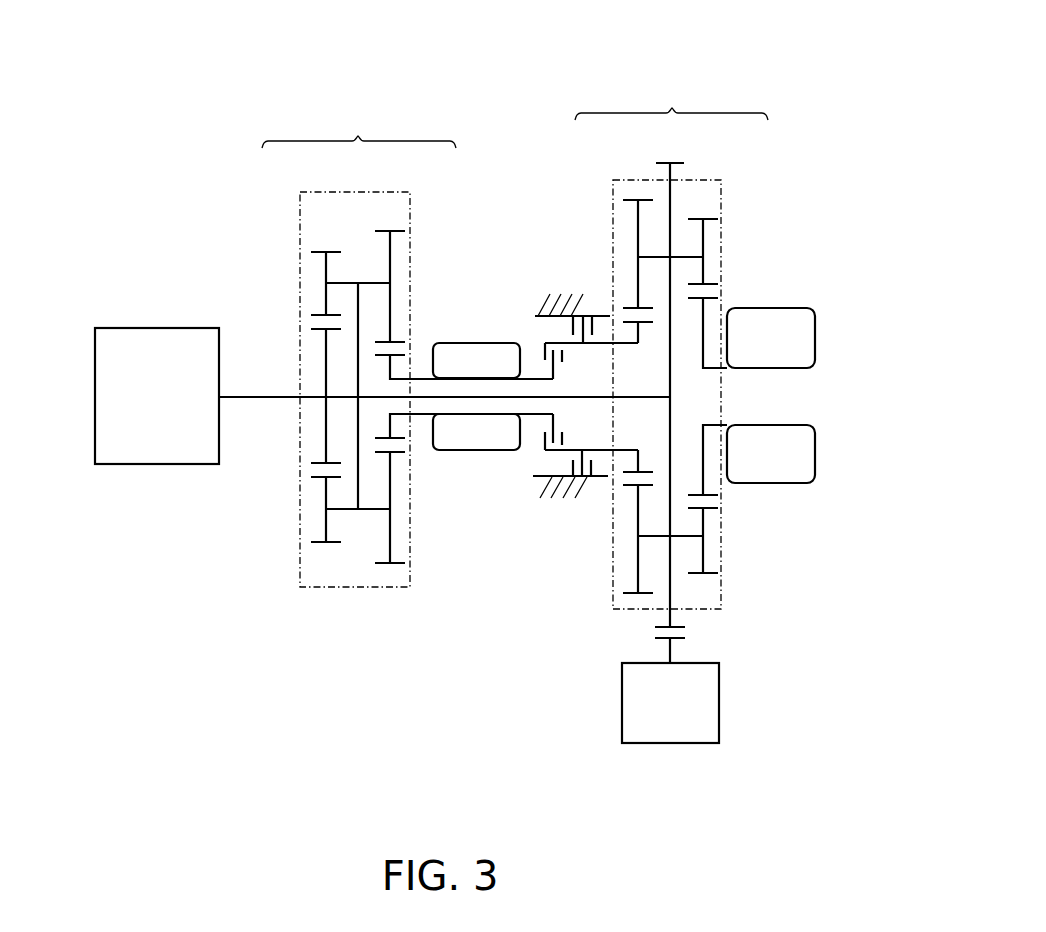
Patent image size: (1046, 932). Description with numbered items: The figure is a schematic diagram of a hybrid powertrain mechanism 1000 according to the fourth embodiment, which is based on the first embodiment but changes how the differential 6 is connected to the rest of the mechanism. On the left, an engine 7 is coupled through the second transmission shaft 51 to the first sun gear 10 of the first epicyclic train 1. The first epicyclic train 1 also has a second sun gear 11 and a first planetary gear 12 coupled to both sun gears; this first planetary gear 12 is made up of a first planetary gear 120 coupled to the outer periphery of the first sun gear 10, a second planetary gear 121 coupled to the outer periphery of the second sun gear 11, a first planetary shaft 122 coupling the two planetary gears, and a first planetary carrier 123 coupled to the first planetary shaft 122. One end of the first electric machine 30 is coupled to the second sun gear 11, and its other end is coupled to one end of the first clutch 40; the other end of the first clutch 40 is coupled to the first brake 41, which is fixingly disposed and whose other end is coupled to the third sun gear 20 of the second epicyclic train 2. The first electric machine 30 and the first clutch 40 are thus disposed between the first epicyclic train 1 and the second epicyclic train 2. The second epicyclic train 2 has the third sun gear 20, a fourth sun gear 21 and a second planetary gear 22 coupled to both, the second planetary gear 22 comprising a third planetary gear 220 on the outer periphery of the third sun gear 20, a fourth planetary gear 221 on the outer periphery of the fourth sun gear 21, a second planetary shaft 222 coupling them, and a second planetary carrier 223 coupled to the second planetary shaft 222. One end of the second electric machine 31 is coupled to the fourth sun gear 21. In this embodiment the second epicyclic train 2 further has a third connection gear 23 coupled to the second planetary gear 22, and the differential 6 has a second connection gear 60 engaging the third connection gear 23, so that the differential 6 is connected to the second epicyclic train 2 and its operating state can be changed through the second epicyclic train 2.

The hybrid powertrain mechanism 1000 is at (829, 97).
The engine 7 is at (157, 466).
The second transmission shaft 51 is at (248, 399).
The first epicyclic train 1 is at (354, 588).
The first planetary gear 12 is at (359, 338).
The first planetary gear 120 is at (323, 263).
The first planetary shaft 122 is at (343, 283).
The first planetary carrier 123 is at (358, 293).
The second planetary gear 121 is at (390, 245).
The first sun gear 10 is at (325, 360).
The second sun gear 11 is at (390, 368).
The first electric machine 30 is at (481, 451).
The first clutch 40 is at (541, 348).
The first brake 41 is at (598, 321).
The second epicyclic train 2 is at (622, 609).
The second planetary gear 22 is at (671, 329).
The third planetary gear 220 is at (636, 228).
The second planetary shaft 222 is at (657, 257).
The second planetary carrier 223 is at (672, 268).
The fourth planetary gear 221 is at (704, 238).
The third sun gear 20 is at (637, 462).
The fourth sun gear 21 is at (706, 483).
The third connection gear 23 is at (673, 592).
The second electric machine 31 is at (773, 485).
The second connection gear 60 is at (673, 645).
The differential 6 is at (668, 745).